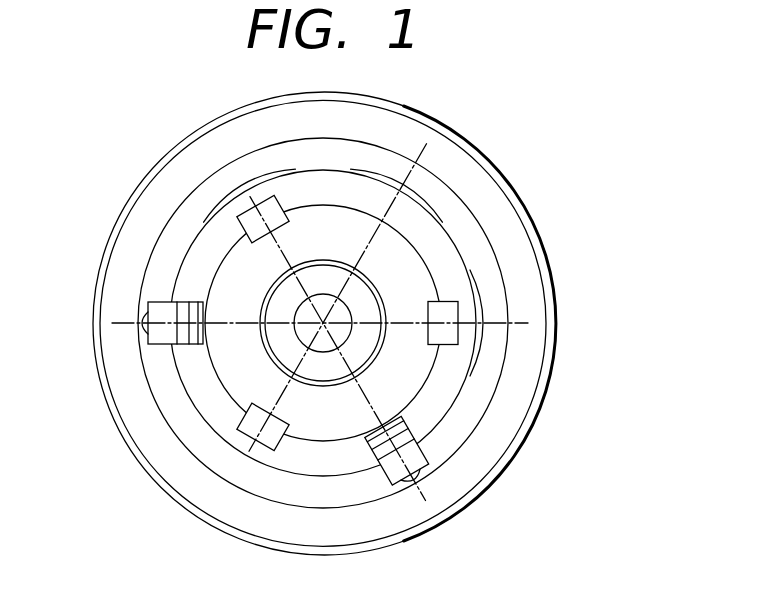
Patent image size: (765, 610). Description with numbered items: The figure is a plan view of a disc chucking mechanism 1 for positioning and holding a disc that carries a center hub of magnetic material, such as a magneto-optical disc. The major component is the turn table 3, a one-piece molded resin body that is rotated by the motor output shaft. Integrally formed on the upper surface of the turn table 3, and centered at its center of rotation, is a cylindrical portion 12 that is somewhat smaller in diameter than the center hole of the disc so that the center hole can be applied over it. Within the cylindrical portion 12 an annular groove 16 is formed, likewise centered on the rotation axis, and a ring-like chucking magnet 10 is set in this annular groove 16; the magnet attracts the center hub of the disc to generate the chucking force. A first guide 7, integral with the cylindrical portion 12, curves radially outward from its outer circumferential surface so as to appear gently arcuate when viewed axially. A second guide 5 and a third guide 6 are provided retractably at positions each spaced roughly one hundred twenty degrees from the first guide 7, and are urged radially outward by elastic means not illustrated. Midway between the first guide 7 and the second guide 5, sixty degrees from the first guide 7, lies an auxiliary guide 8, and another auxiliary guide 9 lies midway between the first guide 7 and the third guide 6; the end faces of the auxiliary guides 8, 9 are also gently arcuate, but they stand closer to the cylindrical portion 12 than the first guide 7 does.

The disc chucking mechanism 1 is at (580, 183).
The turn table 3 is at (547, 397).
The second guide 5 is at (139, 320).
The third guide 6 is at (416, 478).
The first guide 7 is at (427, 197).
The auxiliary guide 8 is at (223, 197).
The auxiliary guide 9 is at (484, 346).
The chucking magnet 10 is at (420, 273).
The cylindrical portion 12 is at (450, 407).
The annular groove 16 is at (233, 393).